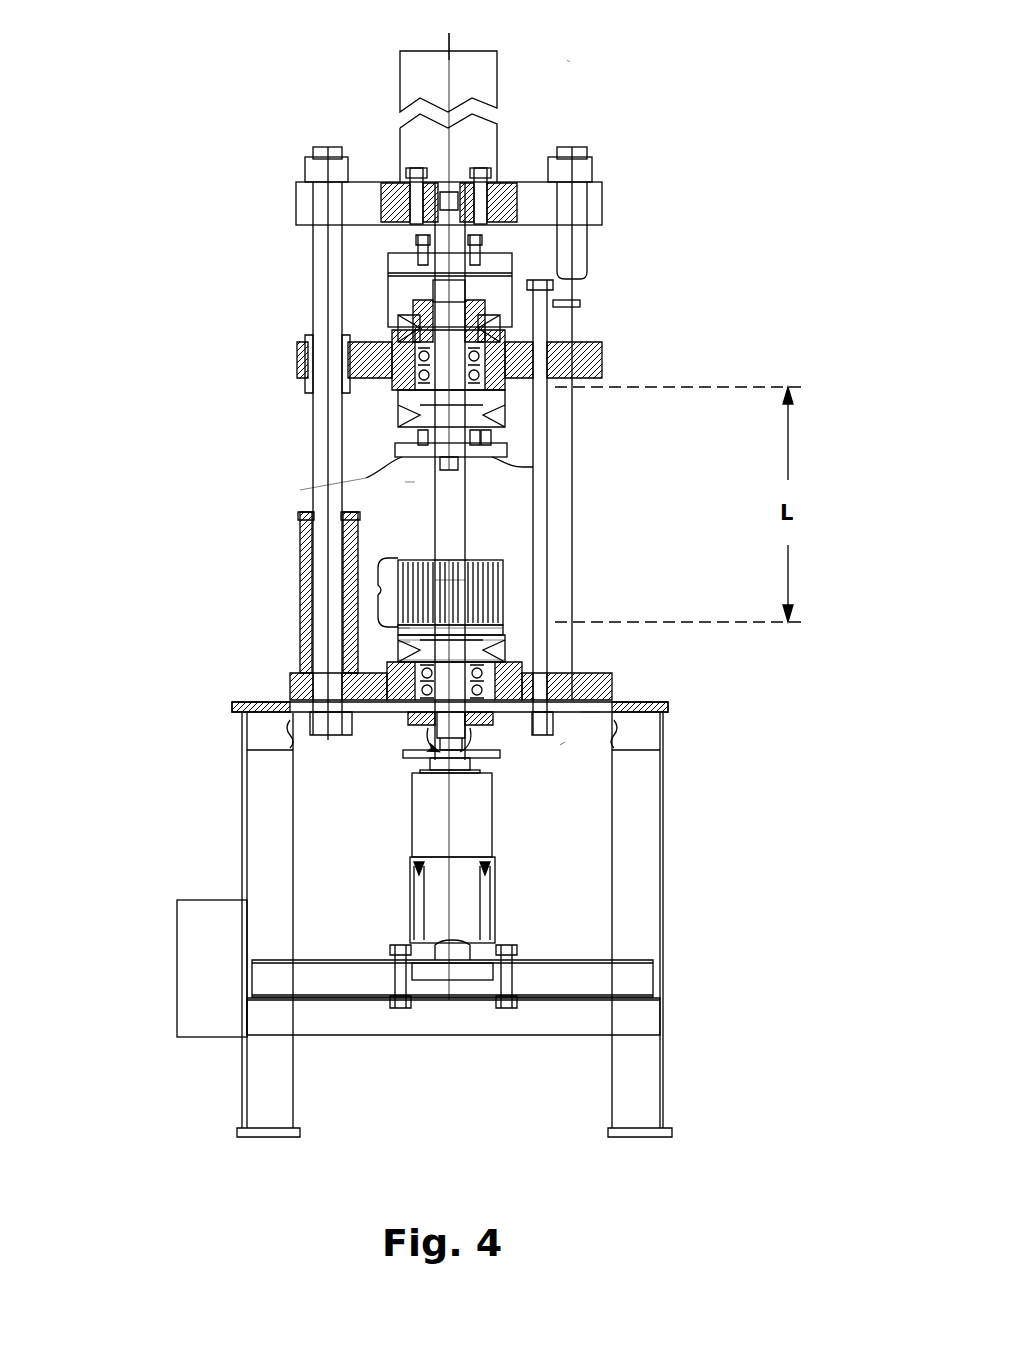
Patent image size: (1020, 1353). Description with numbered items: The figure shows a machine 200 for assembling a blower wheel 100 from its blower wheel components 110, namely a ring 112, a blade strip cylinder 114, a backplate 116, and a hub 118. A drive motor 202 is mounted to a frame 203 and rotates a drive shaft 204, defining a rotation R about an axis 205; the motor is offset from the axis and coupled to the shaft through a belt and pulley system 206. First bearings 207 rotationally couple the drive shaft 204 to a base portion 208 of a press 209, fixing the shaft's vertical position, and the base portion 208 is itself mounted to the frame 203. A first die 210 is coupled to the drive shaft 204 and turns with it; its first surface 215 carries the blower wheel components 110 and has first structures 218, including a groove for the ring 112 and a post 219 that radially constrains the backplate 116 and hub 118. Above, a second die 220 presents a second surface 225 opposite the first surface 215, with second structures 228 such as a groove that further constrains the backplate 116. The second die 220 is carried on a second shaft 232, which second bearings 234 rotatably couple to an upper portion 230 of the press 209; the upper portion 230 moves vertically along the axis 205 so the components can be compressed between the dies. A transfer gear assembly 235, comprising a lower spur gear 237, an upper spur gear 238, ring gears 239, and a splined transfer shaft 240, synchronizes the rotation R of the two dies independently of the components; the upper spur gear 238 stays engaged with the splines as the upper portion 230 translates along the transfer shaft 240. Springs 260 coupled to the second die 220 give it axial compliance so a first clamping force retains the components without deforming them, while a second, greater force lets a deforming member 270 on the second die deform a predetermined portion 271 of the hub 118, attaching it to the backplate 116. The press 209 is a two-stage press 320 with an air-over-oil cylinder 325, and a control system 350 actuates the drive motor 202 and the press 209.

The blower wheel 100 is at (433, 538).
The blower wheel components 110 is at (355, 590).
The ring 112 is at (512, 665).
The blade strip cylinder 114 is at (507, 640).
The backplate 116 is at (507, 585).
The hub 118 is at (507, 605).
The machine 200 is at (567, 60).
The drive motor 202 is at (475, 817).
The frame 203 is at (255, 1055).
The drive shaft 204 is at (427, 722).
The axis 205 is at (450, 42).
The belt and pulley system 206 is at (405, 753).
The first bearings 207 is at (233, 705).
The base portion 208 is at (628, 690).
The press 209 is at (615, 232).
The first die 210 is at (560, 645).
The first surface 215 is at (413, 628).
The first structures 218 is at (413, 642).
The post 219 is at (507, 627).
The second die 220 is at (507, 453).
The second surface 225 is at (523, 467).
The second structures 228 is at (410, 476).
The upper portion 230 is at (492, 352).
The second shaft 232 is at (400, 325).
The second bearings 234 is at (350, 357).
The transfer gear assembly 235 is at (593, 712).
The lower spur gear 237 is at (562, 745).
The upper spur gear 238 is at (580, 303).
The ring gears 239 is at (540, 295).
The transfer shaft 240 is at (507, 562).
The springs 260 is at (487, 437).
The deforming member 270 is at (413, 484).
The predetermined portion 271 is at (376, 570).
The two-stage press 320 is at (388, 108).
The cylinder 325 is at (408, 140).
The control system 350 is at (187, 980).
The rotation R is at (433, 737).